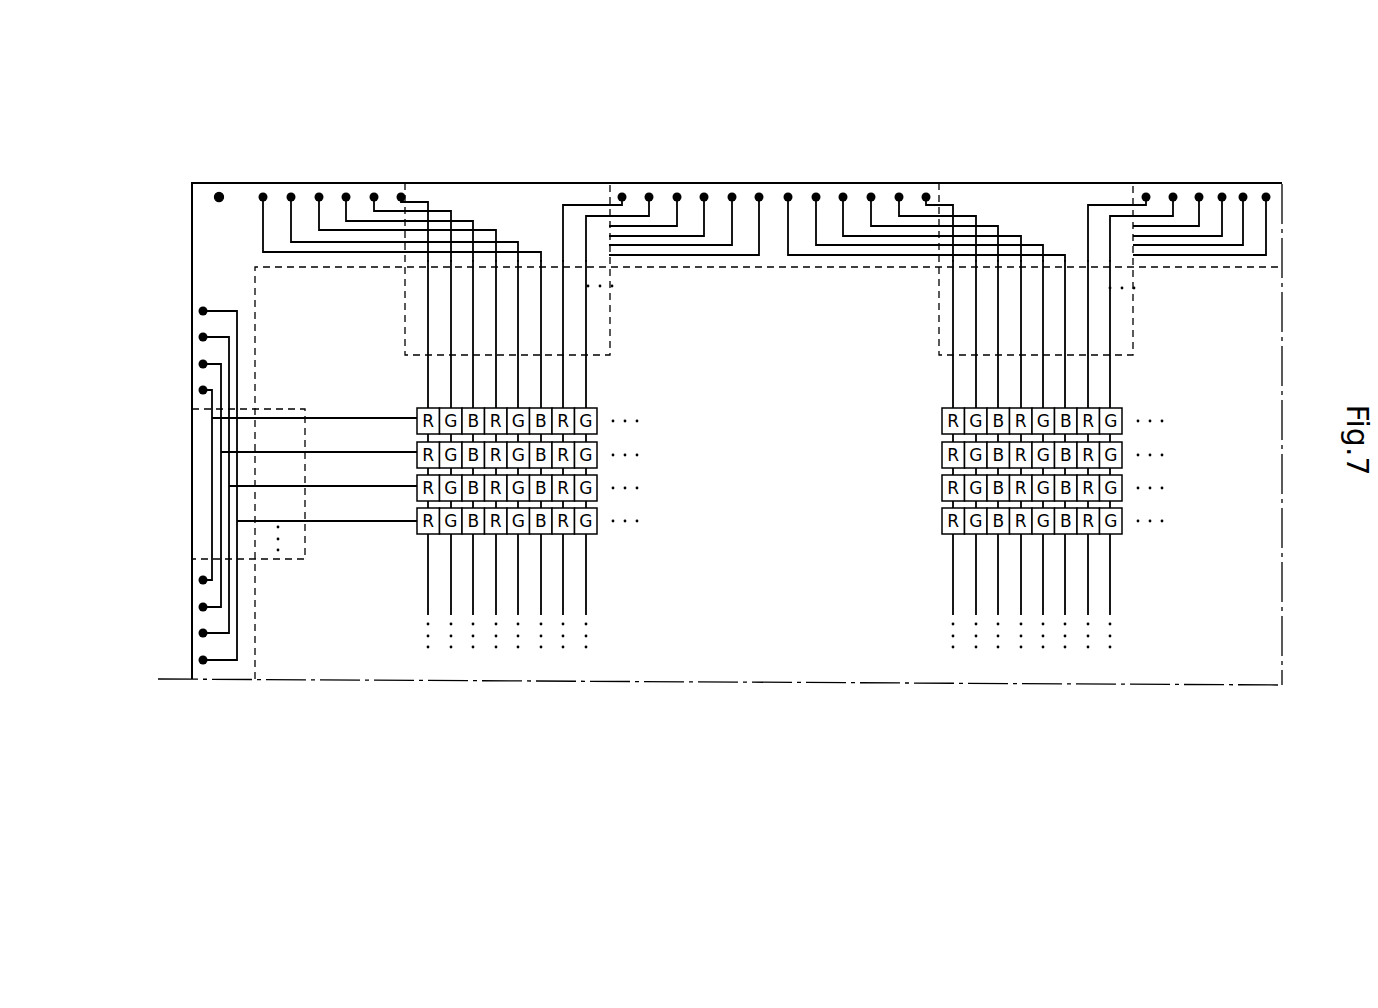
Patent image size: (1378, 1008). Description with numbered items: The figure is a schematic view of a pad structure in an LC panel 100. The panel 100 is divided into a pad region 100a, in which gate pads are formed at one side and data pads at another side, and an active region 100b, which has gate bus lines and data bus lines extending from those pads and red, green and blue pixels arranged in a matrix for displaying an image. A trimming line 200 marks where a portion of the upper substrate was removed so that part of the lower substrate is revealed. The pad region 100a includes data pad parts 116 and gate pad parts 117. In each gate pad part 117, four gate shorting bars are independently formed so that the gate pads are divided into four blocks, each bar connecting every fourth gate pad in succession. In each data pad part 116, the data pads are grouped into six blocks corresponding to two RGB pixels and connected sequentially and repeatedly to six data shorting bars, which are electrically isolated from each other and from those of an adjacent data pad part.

The LC panel 100 is at (741, 110).
The pad region 100a is at (217, 251).
The active region 100b is at (1187, 668).
The data pad part 116 is at (606, 277).
The gate pad part 117 is at (248, 558).
The trimming line 200 is at (255, 628).